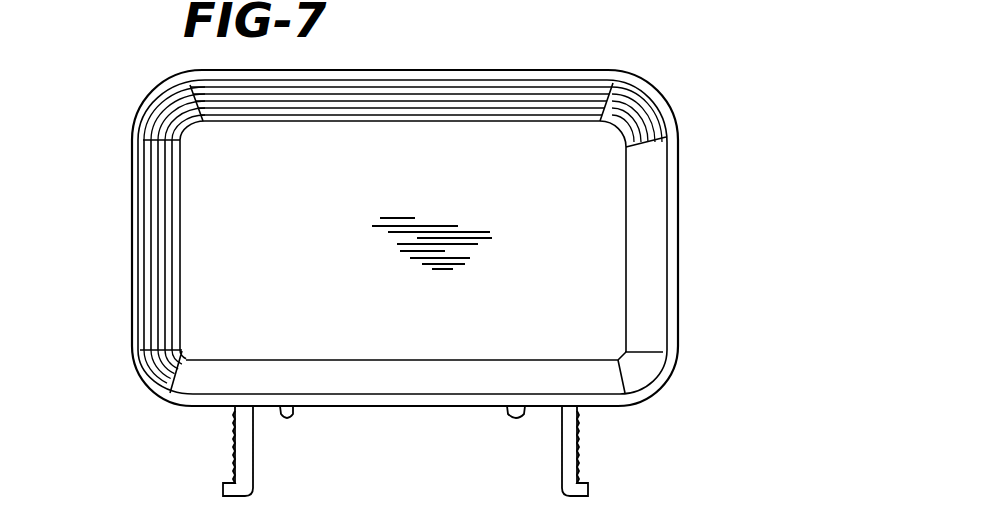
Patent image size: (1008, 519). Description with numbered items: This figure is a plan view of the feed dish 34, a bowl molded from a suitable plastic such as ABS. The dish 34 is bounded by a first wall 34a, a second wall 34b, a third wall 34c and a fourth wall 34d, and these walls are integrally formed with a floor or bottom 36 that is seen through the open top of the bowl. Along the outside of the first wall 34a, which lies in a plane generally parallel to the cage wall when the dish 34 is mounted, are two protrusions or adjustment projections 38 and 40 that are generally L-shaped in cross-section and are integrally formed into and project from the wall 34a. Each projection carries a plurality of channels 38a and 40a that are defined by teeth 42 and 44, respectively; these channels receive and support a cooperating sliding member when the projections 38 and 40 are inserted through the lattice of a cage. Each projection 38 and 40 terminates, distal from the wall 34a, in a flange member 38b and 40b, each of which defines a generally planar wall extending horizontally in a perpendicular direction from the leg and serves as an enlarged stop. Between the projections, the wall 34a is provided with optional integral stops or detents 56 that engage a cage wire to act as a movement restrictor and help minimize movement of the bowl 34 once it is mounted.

The feed dish 34 is at (130, 152).
The first wall 34a is at (413, 404).
The second wall 34b is at (677, 213).
The third wall 34c is at (535, 70).
The fourth wall 34d is at (130, 222).
The floor 36 is at (387, 242).
The adjustment projection 38 is at (561, 487).
The channels 38a is at (578, 437).
The flange member 38b is at (590, 485).
The adjustment projection 40 is at (257, 475).
The channels 40a is at (234, 440).
The flange member 40b is at (222, 485).
The teeth 42 is at (640, 452).
The teeth 44 is at (234, 446).
The detents 56 is at (505, 420).